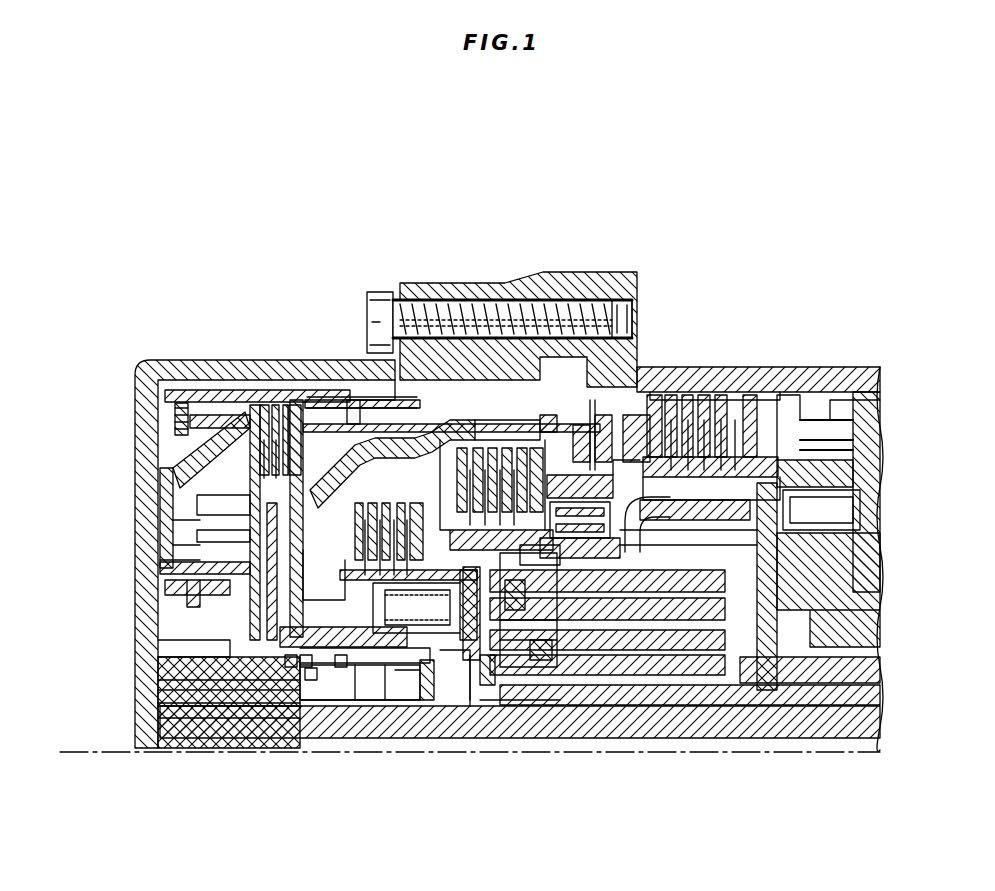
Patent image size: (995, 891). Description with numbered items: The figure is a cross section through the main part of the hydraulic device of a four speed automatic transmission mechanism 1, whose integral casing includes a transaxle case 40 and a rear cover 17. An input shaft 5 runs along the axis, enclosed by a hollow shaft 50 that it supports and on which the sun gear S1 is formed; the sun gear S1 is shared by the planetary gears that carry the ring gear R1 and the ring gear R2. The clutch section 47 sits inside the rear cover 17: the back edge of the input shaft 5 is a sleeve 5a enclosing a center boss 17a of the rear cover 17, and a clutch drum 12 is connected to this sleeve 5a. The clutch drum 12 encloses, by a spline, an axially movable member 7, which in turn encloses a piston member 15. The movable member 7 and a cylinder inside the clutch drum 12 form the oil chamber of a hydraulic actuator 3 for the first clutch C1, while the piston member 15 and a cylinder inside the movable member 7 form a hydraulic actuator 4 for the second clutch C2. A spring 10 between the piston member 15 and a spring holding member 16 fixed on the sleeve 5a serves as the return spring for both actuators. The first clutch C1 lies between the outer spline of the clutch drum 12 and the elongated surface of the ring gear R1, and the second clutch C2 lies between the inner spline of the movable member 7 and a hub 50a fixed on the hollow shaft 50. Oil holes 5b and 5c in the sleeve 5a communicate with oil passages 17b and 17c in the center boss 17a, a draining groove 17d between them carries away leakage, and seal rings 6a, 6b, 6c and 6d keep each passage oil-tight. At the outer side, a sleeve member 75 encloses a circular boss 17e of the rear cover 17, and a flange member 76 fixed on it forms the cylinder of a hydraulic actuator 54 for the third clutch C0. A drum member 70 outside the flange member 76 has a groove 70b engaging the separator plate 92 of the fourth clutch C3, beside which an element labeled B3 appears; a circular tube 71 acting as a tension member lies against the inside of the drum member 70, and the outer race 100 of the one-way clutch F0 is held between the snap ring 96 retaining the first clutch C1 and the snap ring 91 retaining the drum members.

The four speed automatic transmission mechanism 1 is at (175, 245).
The hydraulic actuator 3 is at (280, 700).
The hydraulic actuator 4 is at (395, 637).
The input shaft 5 is at (750, 725).
The sleeve 5a is at (200, 680).
The oil hole 5b is at (300, 690).
The oil hole 5c is at (400, 670).
The seal ring 6a is at (255, 712).
The seal ring 6b is at (300, 660).
The seal ring 6c is at (360, 700).
The seal ring 6d is at (425, 690).
The movable member 7 is at (190, 715).
The spring 10 is at (455, 640).
The clutch drum 12 is at (445, 435).
The piston member 15 is at (322, 610).
The spring holding member 16 is at (470, 650).
The rear cover 17 is at (142, 522).
The center boss 17a is at (340, 660).
The oil passage 17b is at (290, 660).
The oil passage 17c is at (390, 690).
The draining groove 17d is at (310, 672).
The circular boss 17e is at (170, 655).
The transaxle case 40 is at (627, 352).
The clutch section 47 is at (352, 355).
The hollow shaft 50 is at (823, 697).
The hub 50a is at (520, 660).
The hydraulic actuator 54 is at (180, 470).
The drum member 70 is at (478, 425).
The groove 70b is at (528, 440).
The circular tube 71 is at (370, 424).
The sleeve member 75 is at (170, 565).
The flange member 76 is at (170, 533).
The snap ring 91 is at (700, 375).
The separator plate 92 is at (620, 450).
The snap ring 96 is at (521, 560).
The outer race 100 is at (640, 520).
The third clutch C0 is at (285, 395).
The first clutch C1 is at (508, 430).
The second clutch C2 is at (390, 635).
The fourth clutch C3 is at (620, 480).
The brake B3 is at (750, 450).
The ring gear R1 is at (520, 600).
The ring gear R2 is at (770, 460).
The third one-way clutch F0 is at (688, 546).
The sun gear S1 is at (667, 692).